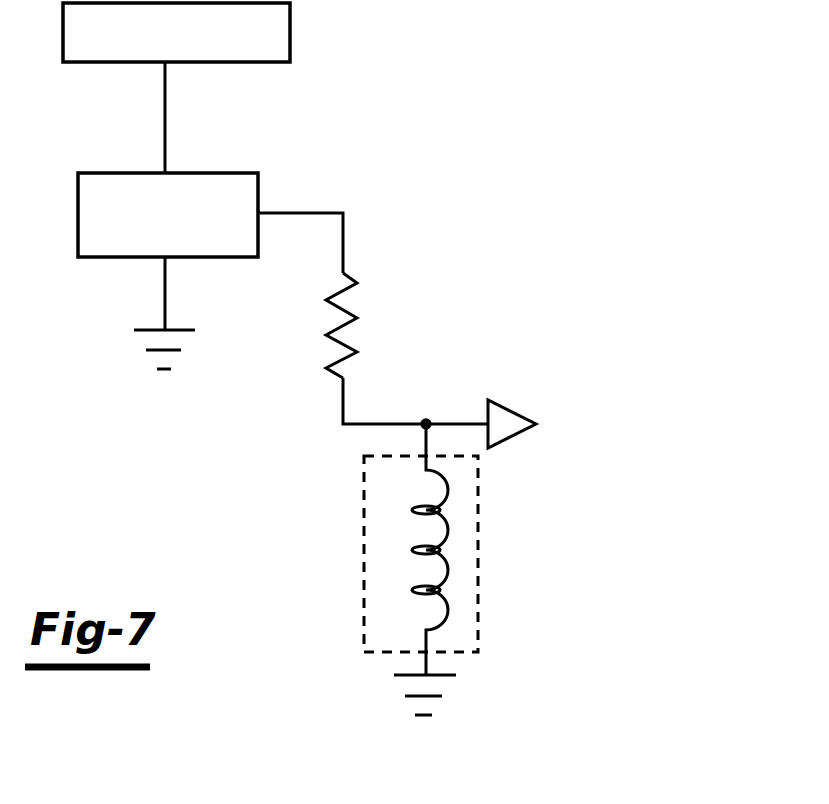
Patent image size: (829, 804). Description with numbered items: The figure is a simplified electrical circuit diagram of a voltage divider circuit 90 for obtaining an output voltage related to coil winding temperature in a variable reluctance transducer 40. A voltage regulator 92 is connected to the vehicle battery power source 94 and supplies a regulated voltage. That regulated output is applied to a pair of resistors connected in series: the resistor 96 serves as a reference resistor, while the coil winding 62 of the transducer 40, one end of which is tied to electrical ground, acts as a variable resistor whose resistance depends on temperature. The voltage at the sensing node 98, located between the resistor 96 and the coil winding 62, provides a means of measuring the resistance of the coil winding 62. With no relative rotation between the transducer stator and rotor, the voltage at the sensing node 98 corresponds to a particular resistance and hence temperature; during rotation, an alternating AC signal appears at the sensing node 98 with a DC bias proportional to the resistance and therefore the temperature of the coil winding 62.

The circuit 90 is at (483, 245).
The vehicle battery power source 94 is at (290, 31).
The voltage regulator 92 is at (112, 257).
The resistor 96 is at (340, 340).
The sensing node 98 is at (510, 438).
The coil winding 62 is at (417, 548).
The transducer 40 is at (430, 549).